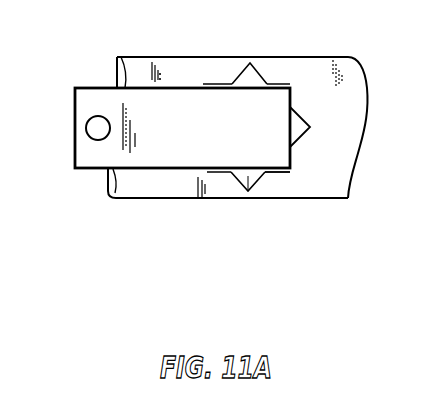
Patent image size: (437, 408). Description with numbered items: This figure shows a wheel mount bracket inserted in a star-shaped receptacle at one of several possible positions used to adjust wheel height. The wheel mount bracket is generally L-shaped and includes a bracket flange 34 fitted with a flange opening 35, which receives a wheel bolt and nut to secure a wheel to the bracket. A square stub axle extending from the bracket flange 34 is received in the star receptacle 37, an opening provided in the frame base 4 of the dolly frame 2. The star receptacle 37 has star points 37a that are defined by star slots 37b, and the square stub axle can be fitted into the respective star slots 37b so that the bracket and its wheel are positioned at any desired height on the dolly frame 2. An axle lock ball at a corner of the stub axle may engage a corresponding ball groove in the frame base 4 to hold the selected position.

The dolly frame 2 is at (133, 206).
The frame base 4 is at (350, 85).
The bracket flange 34 is at (233, 141).
The flange opening 35 is at (95, 130).
The star receptacle 37 is at (317, 127).
The star points 37a is at (248, 191).
The star slots 37b is at (265, 172).